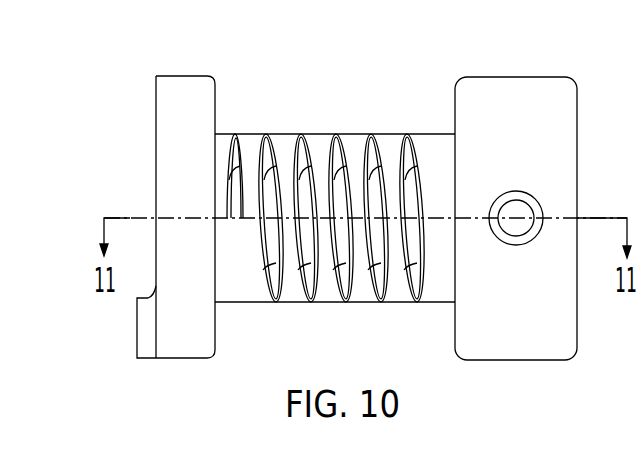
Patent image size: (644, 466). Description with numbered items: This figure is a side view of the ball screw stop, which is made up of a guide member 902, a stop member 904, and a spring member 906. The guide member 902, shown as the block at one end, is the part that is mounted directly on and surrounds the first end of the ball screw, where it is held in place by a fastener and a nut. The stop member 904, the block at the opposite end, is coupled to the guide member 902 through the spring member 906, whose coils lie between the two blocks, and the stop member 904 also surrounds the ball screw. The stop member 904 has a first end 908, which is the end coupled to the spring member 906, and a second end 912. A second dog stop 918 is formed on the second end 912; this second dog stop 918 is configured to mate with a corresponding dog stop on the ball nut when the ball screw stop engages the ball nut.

The guide member 902 is at (542, 77).
The stop member 904 is at (186, 76).
The spring member 906 is at (332, 133).
The first end 908 is at (217, 103).
The second end 912 is at (156, 117).
The second dog stop 918 is at (137, 333).